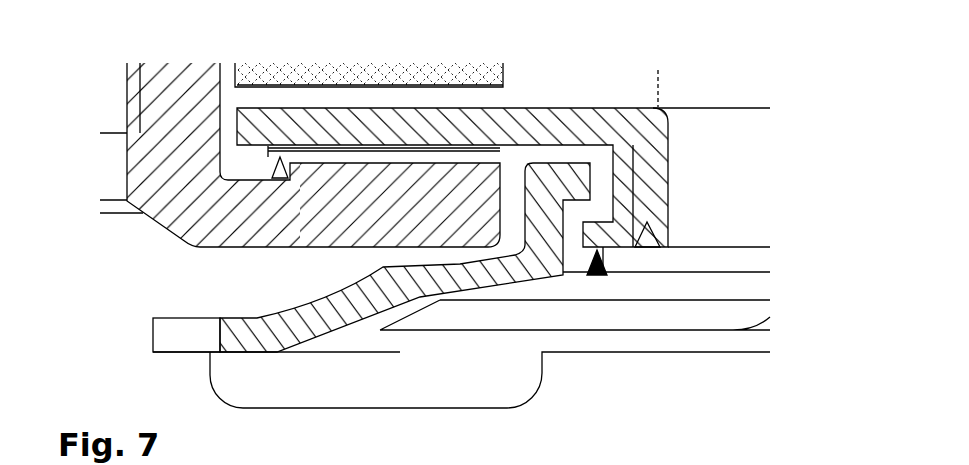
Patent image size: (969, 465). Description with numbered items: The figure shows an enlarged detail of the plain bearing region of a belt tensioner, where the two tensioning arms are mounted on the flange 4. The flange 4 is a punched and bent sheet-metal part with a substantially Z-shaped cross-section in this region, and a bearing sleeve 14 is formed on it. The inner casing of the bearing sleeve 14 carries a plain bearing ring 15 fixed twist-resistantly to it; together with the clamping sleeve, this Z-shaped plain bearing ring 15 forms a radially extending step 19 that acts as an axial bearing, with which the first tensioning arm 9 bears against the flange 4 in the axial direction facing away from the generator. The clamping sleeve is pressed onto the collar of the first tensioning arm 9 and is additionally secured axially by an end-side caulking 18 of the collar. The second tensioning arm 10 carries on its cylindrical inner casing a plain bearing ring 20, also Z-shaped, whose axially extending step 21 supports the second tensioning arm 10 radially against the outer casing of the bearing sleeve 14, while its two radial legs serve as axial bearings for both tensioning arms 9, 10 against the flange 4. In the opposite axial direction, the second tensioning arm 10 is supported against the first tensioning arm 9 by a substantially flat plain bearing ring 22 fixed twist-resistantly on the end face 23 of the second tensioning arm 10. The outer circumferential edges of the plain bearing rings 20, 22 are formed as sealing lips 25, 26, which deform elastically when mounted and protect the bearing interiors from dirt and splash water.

The second tensioning arm 10 is at (177, 227).
The first tensioning arm 9 is at (540, 122).
The plain bearing ring 22 is at (370, 147).
The sealing lip 26 is at (267, 172).
The flange 4 is at (243, 318).
The bearing sleeve 14 is at (563, 230).
The plain bearing ring 15 is at (600, 203).
The plain bearing ring 20 is at (562, 158).
The step 21 is at (482, 200).
The sealing lip 25 is at (391, 266).
The step 19 is at (597, 257).
The caulking 18 is at (647, 235).
The end face 23 is at (704, 452).